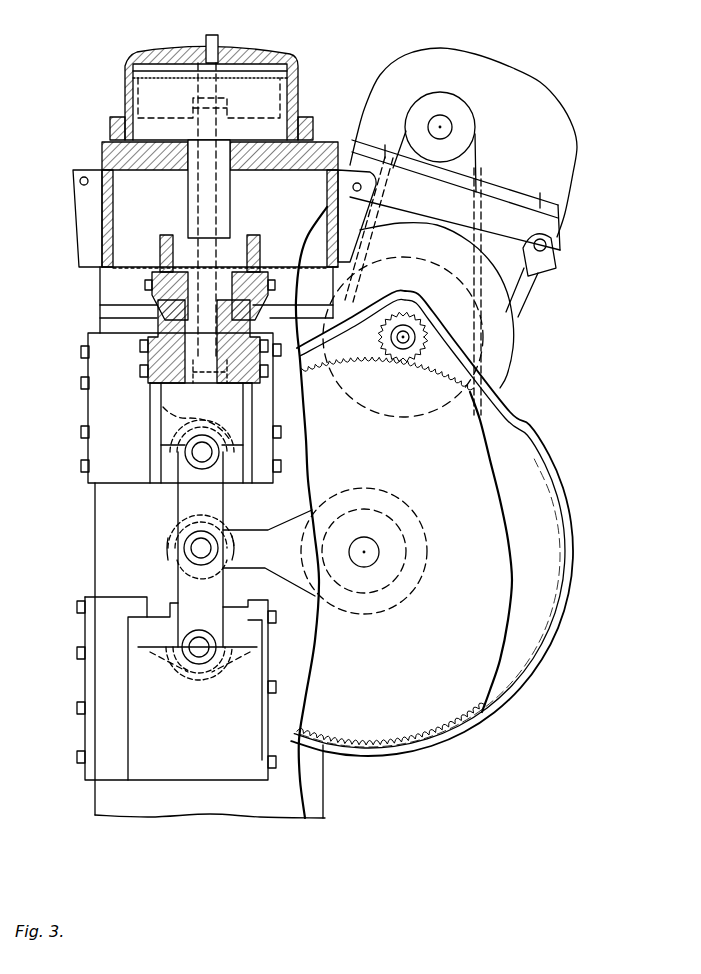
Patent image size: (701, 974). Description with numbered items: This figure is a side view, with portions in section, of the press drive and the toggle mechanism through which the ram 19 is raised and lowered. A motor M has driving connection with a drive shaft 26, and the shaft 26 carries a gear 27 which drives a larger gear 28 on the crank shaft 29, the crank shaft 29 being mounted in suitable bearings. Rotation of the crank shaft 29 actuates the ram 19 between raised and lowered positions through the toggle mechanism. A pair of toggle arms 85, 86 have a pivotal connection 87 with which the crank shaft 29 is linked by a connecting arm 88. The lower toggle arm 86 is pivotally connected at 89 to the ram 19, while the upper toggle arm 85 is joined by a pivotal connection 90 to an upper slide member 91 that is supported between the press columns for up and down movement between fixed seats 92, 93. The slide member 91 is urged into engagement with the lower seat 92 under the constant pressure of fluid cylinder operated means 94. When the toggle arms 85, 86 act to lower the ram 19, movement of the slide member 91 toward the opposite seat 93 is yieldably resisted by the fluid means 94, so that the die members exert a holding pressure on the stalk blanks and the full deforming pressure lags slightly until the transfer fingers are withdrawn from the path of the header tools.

The motor M is at (430, 60).
The fluid cylinder operated means 94 is at (220, 197).
The fixed seat 93 is at (165, 362).
The fixed seat 92 is at (152, 381).
The upper slide member 91 is at (185, 400).
The pivotal connection 90 is at (199, 458).
The toggle arm 85 is at (215, 496).
The pivotal connection 87 is at (200, 548).
The toggle arm 86 is at (190, 587).
The connecting arm 88 is at (250, 557).
The pivotal connection 89 is at (196, 649).
The ram 19 is at (212, 748).
The gear 28 is at (326, 642).
The crank shaft 29 is at (368, 557).
The drive shaft 26 is at (405, 350).
The gear 27 is at (386, 322).